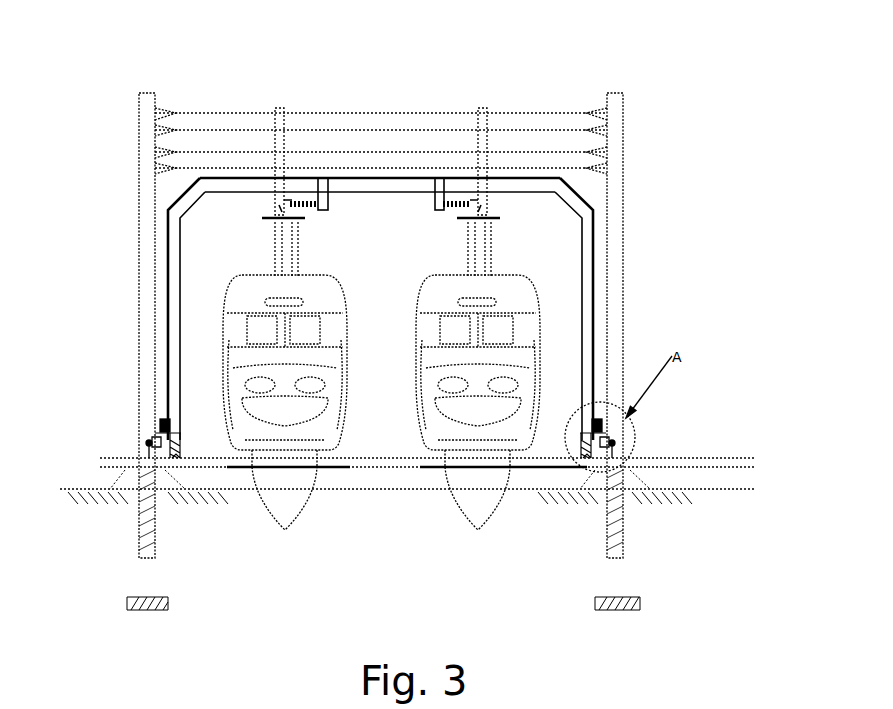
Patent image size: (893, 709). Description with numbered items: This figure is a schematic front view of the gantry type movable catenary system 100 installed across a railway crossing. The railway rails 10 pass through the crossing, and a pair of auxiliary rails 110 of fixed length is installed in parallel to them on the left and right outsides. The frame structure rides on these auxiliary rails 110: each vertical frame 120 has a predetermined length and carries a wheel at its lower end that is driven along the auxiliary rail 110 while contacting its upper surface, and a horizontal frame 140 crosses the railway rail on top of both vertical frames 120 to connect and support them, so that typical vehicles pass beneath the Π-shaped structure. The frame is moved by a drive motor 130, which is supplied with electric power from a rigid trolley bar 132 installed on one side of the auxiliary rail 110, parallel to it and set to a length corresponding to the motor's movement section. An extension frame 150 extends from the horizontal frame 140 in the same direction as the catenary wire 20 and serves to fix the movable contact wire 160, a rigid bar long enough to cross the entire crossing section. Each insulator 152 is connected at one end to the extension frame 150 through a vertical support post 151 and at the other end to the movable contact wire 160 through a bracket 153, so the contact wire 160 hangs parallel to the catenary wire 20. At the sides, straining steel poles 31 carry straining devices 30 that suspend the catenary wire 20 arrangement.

The railway rail 10 is at (381, 415).
The catenary wire 20 is at (262, 210).
The straining device 30 is at (275, 142).
The straining steel pole 31 is at (139, 106).
The movable catenary system 100 is at (510, 172).
The auxiliary rail 110 is at (176, 470).
The vertical frame 120 is at (173, 286).
The drive motor 130 is at (163, 418).
The rigid trolley bar 132 is at (150, 440).
The horizontal frame 140 is at (400, 180).
The extension frame 150 is at (357, 167).
The support post 151 is at (330, 205).
The insulator 152 is at (306, 192).
The bracket 153 is at (290, 201).
The movable contact wire 160 is at (302, 216).